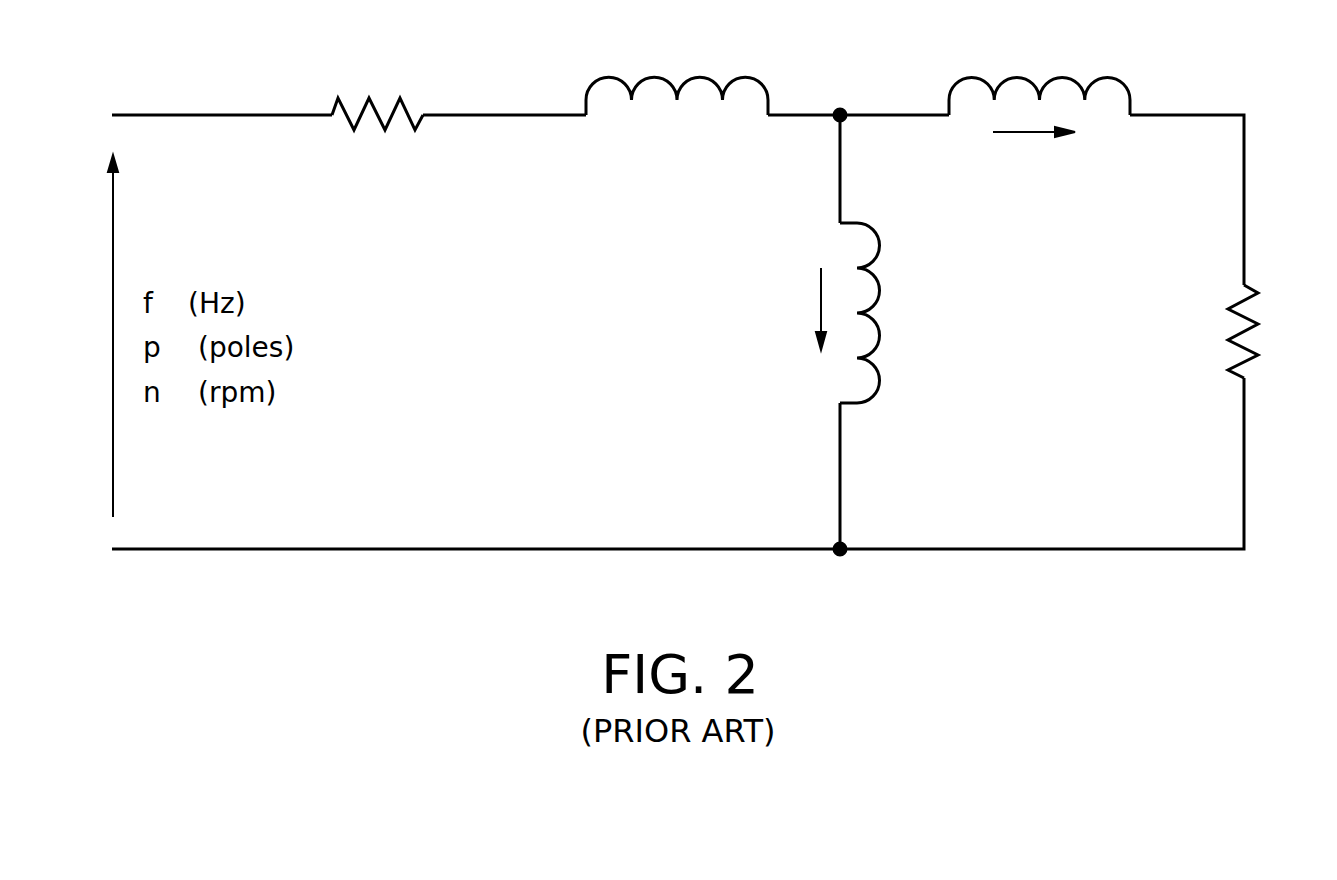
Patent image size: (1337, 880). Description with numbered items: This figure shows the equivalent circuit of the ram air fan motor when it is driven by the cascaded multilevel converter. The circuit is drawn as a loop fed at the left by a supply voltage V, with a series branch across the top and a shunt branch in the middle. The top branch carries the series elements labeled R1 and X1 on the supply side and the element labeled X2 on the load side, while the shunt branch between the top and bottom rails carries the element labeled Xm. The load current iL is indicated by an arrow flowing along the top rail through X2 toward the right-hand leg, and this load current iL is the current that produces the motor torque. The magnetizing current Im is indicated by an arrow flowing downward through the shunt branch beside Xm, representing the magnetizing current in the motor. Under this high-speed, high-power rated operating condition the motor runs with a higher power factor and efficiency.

The stator resistance R1 is at (377, 88).
The stator leakage reactance X1 is at (677, 78).
The rotor leakage reactance X2 is at (1039, 78).
The magnetizing reactance Xm is at (897, 313).
The supply voltage V is at (86, 336).
The load current iL is at (1034, 152).
The magnetizing current Im is at (798, 309).